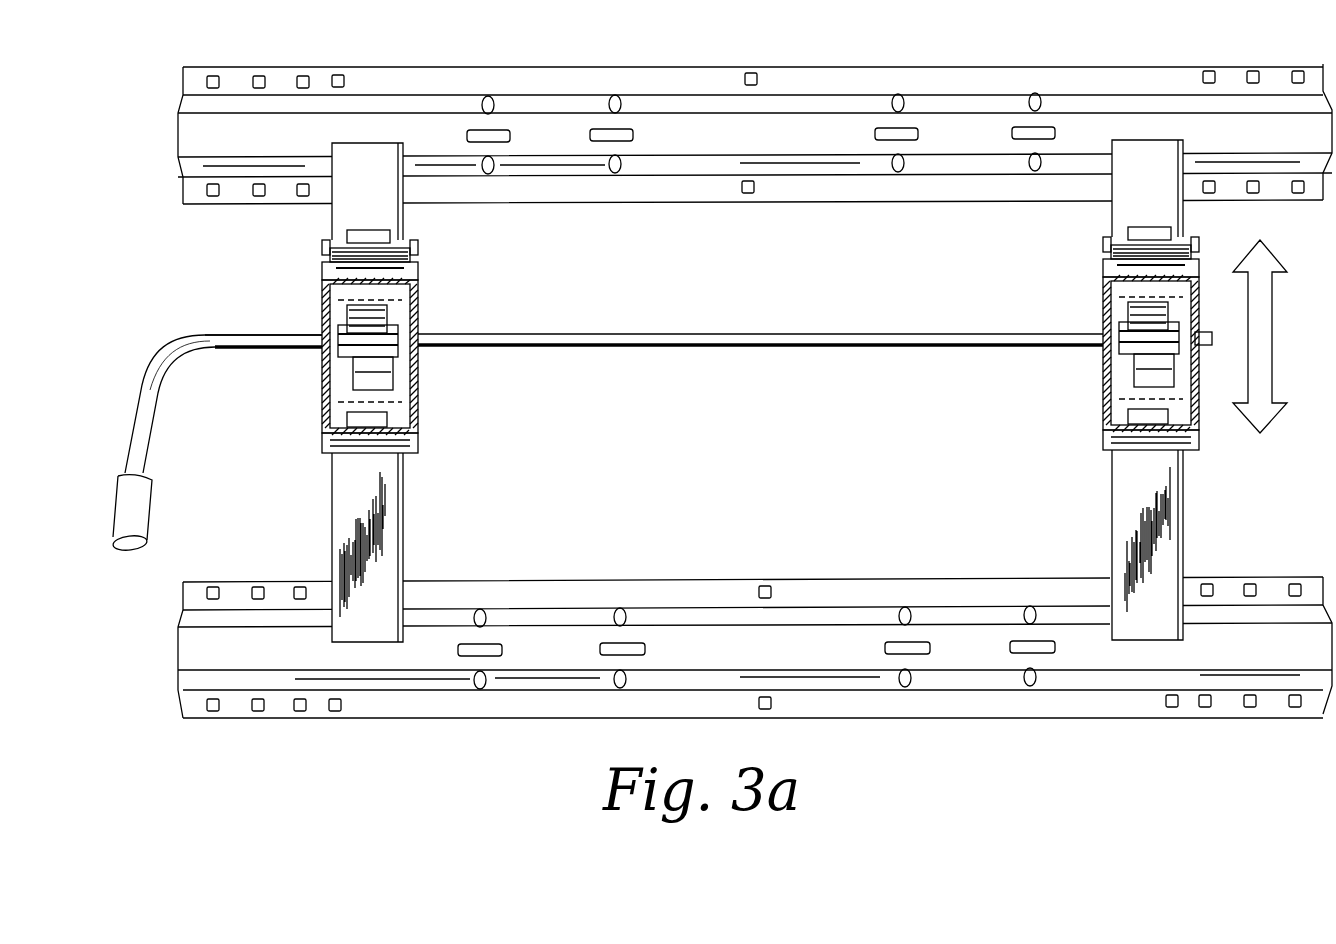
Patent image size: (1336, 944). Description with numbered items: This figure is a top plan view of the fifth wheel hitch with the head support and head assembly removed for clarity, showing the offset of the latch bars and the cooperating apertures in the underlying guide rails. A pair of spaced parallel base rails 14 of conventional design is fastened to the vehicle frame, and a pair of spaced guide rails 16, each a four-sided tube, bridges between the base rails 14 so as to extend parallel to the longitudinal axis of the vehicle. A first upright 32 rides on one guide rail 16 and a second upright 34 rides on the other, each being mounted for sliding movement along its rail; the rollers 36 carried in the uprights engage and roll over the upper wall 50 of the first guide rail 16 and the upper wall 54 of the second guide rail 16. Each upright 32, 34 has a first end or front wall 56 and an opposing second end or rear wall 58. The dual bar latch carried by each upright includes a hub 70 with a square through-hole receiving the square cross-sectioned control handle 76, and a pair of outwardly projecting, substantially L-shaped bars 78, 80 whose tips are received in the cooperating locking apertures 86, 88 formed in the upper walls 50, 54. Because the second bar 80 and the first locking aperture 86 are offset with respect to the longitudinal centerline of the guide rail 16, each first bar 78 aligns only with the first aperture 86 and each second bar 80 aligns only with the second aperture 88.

The base rails 14 is at (707, 188).
The guide rails 16 is at (330, 526).
The first upright 32 is at (413, 280).
The second upright 34 is at (1102, 316).
The roller 36 is at (358, 250).
The upper wall 50 is at (388, 556).
The upper wall 54 is at (1140, 510).
The first end or front wall 56 is at (1158, 272).
The second end or rear wall 58 is at (392, 443).
The hub 70 is at (357, 350).
The control handle 76 is at (636, 340).
The first bar 78 is at (378, 388).
The second bar 80 is at (376, 318).
The first locking aperture 86 is at (378, 238).
The second locking aperture 88 is at (383, 420).